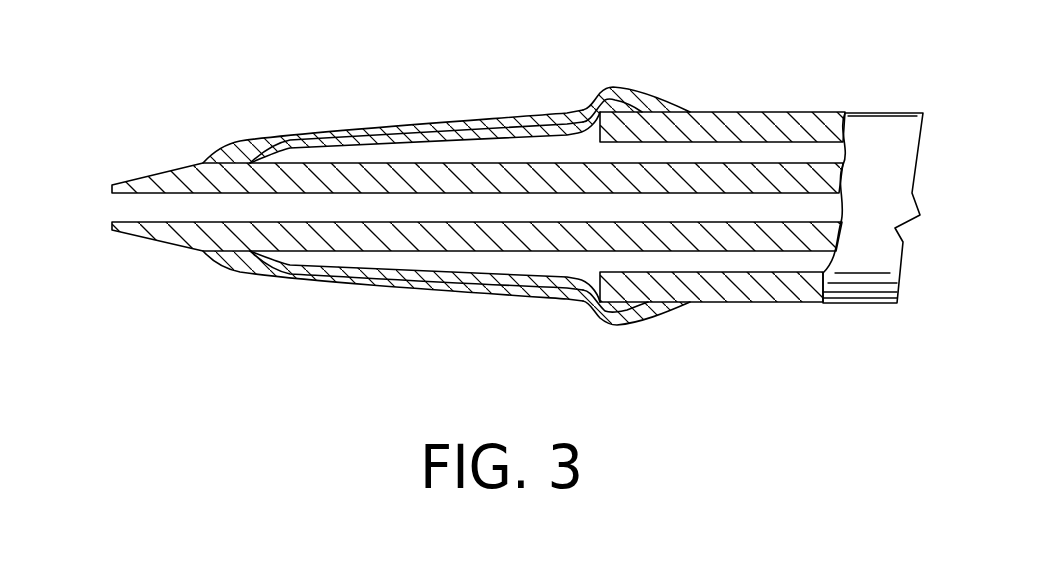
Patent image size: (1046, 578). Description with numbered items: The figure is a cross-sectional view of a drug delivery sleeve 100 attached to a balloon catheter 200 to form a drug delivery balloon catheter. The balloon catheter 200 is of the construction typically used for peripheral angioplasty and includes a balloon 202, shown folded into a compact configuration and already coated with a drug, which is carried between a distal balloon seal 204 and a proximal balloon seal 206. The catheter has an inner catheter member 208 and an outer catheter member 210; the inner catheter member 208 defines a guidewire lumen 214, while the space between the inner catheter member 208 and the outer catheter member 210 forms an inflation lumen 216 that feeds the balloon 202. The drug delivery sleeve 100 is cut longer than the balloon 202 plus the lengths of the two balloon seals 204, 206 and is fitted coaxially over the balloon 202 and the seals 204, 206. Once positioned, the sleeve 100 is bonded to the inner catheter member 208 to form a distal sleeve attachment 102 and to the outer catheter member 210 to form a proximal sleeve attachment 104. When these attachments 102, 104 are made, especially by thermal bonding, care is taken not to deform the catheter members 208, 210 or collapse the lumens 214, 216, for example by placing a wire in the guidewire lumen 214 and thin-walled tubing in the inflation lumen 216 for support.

The drug delivery sleeve 100 is at (408, 123).
The distal sleeve attachment 102 is at (230, 146).
The proximal sleeve attachment 104 is at (655, 92).
The balloon catheter 200 is at (868, 304).
The balloon 202 is at (385, 272).
The distal balloon seal 204 is at (273, 258).
The proximal balloon seal 206 is at (628, 312).
The inner catheter member 208 is at (167, 167).
The outer catheter member 210 is at (763, 112).
The guidewire lumen 214 is at (122, 205).
The inflation lumen 216 is at (718, 262).